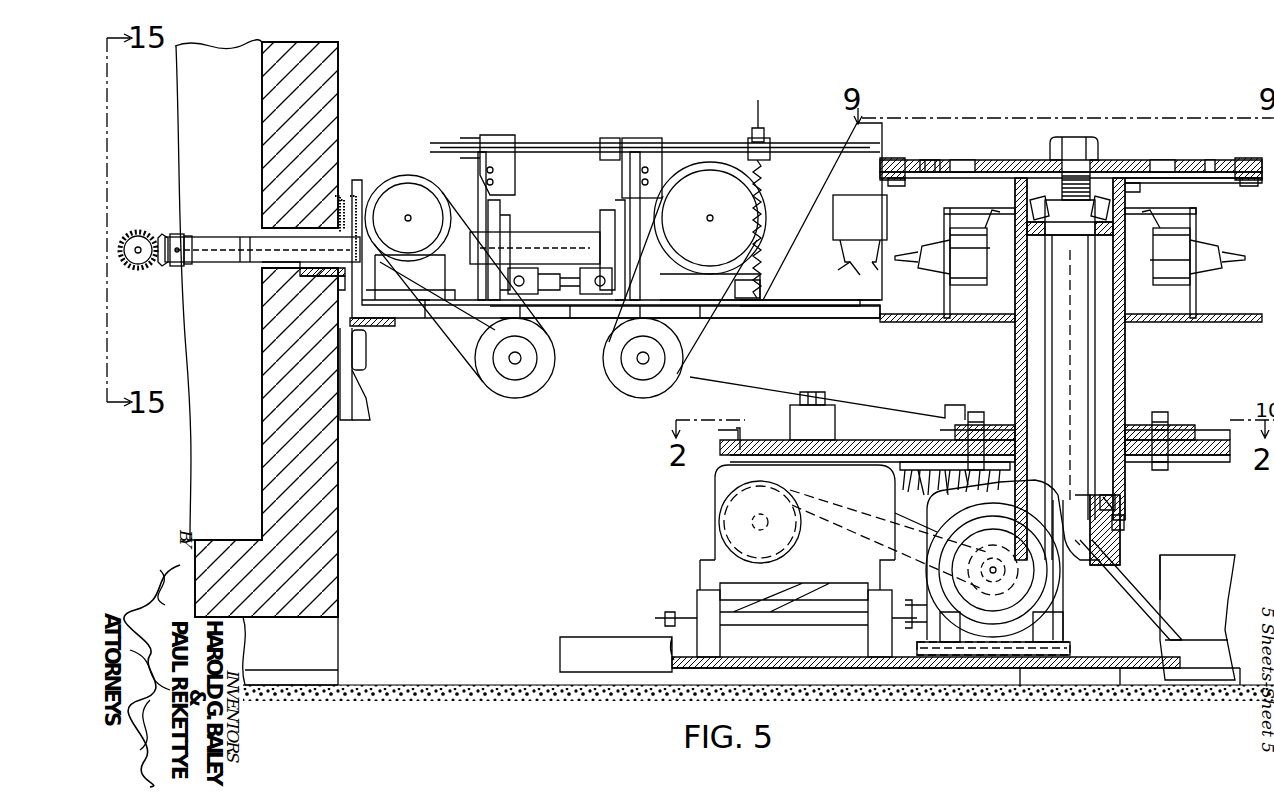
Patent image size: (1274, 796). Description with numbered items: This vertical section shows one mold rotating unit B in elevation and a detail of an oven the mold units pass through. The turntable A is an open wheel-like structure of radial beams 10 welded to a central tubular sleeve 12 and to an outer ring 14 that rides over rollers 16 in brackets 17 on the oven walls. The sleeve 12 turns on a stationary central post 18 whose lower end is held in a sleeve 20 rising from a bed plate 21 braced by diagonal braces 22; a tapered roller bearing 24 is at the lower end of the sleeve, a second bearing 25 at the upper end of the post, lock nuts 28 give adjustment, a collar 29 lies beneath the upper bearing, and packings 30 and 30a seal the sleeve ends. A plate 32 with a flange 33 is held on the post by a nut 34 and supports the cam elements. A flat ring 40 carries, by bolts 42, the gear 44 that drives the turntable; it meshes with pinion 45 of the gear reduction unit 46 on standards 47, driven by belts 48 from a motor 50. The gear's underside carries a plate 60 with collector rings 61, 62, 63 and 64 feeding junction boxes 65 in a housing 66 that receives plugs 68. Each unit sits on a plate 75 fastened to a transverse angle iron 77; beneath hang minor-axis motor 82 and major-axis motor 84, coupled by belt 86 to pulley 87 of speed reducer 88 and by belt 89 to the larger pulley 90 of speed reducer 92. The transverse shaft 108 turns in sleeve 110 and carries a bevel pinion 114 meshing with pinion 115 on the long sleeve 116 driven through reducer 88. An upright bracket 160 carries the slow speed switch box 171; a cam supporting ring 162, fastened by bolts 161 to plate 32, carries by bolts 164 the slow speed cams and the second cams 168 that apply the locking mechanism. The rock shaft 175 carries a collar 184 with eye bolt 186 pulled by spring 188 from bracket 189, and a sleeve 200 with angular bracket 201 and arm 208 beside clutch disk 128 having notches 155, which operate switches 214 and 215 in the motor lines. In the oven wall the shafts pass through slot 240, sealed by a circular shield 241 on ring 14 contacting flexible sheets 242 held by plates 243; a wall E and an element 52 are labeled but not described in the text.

The base plate 10 is at (1222, 326).
The column 12 is at (1125, 306).
The frame foot 14 is at (370, 328).
The bracket 16 is at (360, 368).
The bracket arm 17 is at (354, 392).
The shaft 18 is at (1100, 378).
The pedestal 20 is at (1122, 548).
The base 21 is at (1088, 660).
The support member 22 is at (1200, 568).
The bearing 24 is at (1118, 506).
The bearing 25 is at (1112, 208).
The collar 28 is at (1095, 185).
The bracket plate 29 is at (1178, 210).
The sleeve 30 is at (1048, 238).
The sleeve end 30a is at (1126, 527).
The plate 32 is at (1148, 168).
The flange 33 is at (1132, 187).
The nut 34 is at (1092, 147).
The clamp block 40 is at (985, 435).
The bolt 42 is at (980, 390).
The plate 44 is at (895, 445).
The bolt block 45 is at (838, 441).
The brush 46 is at (868, 492).
The support 47 is at (720, 646).
The pulley 48 is at (893, 520).
The motor 50 is at (1040, 585).
The bracket 52 is at (733, 440).
The housing 60 is at (1016, 481).
The member 61 is at (968, 480).
The member 62 is at (948, 490).
The belt 63 is at (935, 535).
The member 64 is at (915, 490).
The solenoid 65 is at (968, 286).
The bracket plate 66 is at (1197, 226).
The plunger 68 is at (908, 280).
The frame 75 is at (766, 328).
The frame rail 77 is at (572, 320).
The pulley 82 is at (540, 380).
The pulley 84 is at (683, 360).
The belt 86 is at (465, 345).
The pulley 87 is at (408, 195).
The belt 88 is at (416, 323).
The belt 89 is at (700, 332).
The pulley 90 is at (738, 215).
The bracket 92 is at (762, 288).
The hub 108 is at (174, 240).
The wheel 110 is at (138, 234).
The coupling 114 is at (164, 236).
The collar 115 is at (188, 246).
The shaft 116 is at (226, 244).
The plate 128 is at (500, 217).
The plate 155 is at (610, 246).
The bracket 160 is at (810, 226).
The top plate 161 is at (960, 162).
The spacer 162 is at (932, 162).
The clip 164 is at (900, 181).
The block 168 is at (900, 160).
The solenoid 171 is at (887, 226).
The shaft 175 is at (545, 145).
The block 184 is at (770, 142).
The pin 186 is at (758, 125).
The spring 188 is at (762, 186).
The bar 189 is at (768, 300).
The bearing block 200 is at (658, 142).
The bearing block 201 is at (510, 172).
The post 208 is at (480, 176).
The bearing 214 is at (596, 272).
The bearing 215 is at (523, 276).
The plate 240 is at (278, 270).
The gasket 241 is at (353, 204).
The gasket 242 is at (322, 196).
The plate 243 is at (262, 320).
The belt A is at (705, 382).
The machine frame B is at (572, 170).
The wall E is at (330, 494).